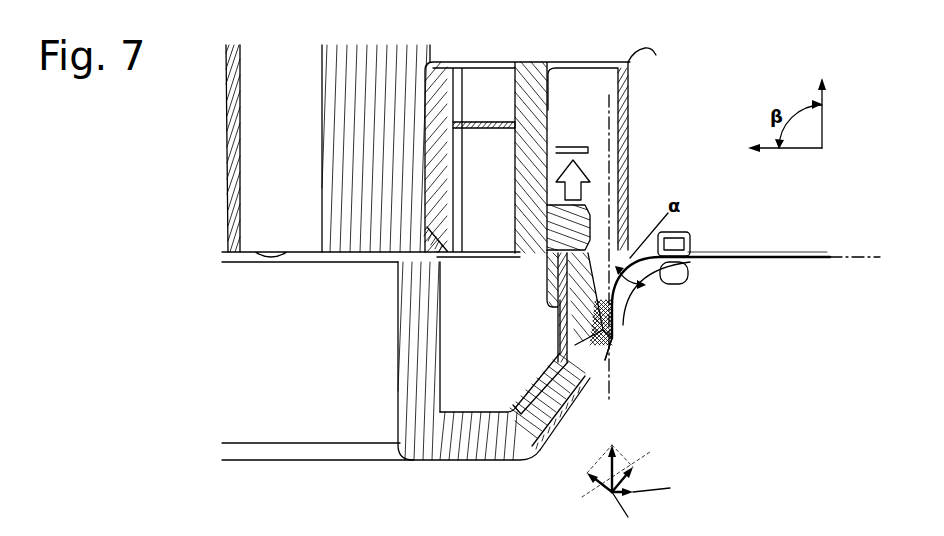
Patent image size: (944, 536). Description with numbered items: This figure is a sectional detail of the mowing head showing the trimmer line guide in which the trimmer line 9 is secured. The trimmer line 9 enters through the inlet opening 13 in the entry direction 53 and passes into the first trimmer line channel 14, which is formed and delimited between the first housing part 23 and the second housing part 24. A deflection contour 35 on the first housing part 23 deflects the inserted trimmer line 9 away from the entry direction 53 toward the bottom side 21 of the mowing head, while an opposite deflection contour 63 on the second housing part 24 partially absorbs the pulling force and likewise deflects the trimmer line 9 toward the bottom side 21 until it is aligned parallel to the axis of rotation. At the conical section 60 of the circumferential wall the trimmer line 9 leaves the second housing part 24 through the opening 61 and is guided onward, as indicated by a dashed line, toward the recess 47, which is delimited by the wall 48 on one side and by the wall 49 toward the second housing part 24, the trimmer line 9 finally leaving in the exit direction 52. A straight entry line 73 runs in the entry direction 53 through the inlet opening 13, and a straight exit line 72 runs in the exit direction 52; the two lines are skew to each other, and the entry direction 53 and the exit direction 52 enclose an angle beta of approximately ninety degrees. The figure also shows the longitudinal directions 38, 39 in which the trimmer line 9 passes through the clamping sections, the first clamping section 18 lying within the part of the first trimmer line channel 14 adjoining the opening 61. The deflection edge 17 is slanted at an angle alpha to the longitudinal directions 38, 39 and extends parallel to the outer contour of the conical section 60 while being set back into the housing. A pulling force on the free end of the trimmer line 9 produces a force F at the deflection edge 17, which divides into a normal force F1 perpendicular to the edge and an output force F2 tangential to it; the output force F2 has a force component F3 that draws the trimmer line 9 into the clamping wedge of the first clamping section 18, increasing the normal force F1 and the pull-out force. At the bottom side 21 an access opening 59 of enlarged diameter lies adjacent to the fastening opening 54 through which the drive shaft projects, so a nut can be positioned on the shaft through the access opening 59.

The trimmer line 9 is at (714, 258).
The inlet opening 13 is at (694, 234).
The first trimmer line channel 14 is at (622, 282).
The deflection edge 17 is at (618, 316).
The first clamping section 18 is at (604, 324).
The bottom side 21 is at (443, 463).
The first housing part 23 is at (531, 55).
The second housing part 24 is at (481, 445).
The deflection contour 35 is at (615, 262).
The longitudinal direction 38 is at (611, 372).
The longitudinal direction 39 is at (608, 349).
The recess 47 is at (597, 90).
The wall 48 is at (650, 50).
The wall 49 is at (582, 232).
The exit direction 52 is at (835, 113).
The entry direction 53 is at (785, 160).
The fastening opening 54 is at (255, 78).
The access opening 59 is at (364, 418).
The conical section 60 is at (553, 423).
The opening 61 is at (616, 332).
The deflection contour 63 is at (628, 250).
The straight exit line 72 is at (605, 108).
The straight entry line 73 is at (850, 256).
The force F is at (624, 471).
The normal force F1 is at (586, 495).
The output force F2 is at (653, 492).
The force component F3 is at (629, 514).